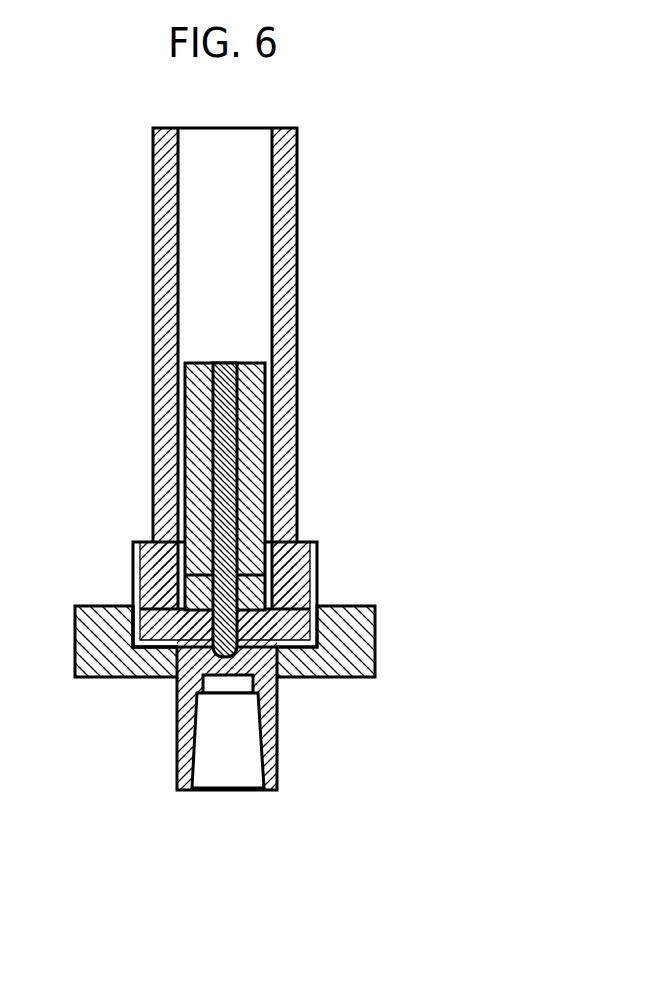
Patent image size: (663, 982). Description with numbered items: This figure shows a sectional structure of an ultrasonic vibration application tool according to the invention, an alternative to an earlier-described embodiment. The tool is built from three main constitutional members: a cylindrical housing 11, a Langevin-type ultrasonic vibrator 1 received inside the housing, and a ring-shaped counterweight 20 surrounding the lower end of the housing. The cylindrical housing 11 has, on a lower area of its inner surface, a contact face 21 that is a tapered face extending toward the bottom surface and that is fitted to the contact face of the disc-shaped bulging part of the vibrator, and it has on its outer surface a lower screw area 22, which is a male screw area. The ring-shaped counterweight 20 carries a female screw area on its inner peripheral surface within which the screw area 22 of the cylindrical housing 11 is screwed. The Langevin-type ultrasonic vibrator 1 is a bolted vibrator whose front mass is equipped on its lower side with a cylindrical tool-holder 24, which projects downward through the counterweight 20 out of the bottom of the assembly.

The Langevin-type ultrasonic vibrator 1 is at (238, 363).
The cylindrical housing 11 is at (153, 231).
The ring-shaped counterweight 20 is at (377, 670).
The contact face 21 is at (290, 585).
The screw area 22 is at (150, 640).
The cylindrical tool-holder 24 is at (278, 768).